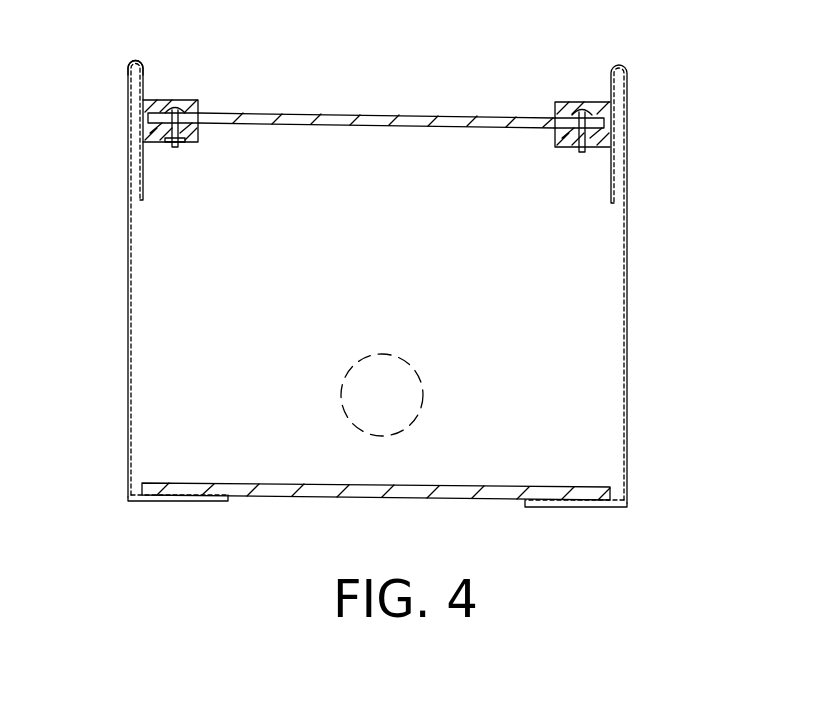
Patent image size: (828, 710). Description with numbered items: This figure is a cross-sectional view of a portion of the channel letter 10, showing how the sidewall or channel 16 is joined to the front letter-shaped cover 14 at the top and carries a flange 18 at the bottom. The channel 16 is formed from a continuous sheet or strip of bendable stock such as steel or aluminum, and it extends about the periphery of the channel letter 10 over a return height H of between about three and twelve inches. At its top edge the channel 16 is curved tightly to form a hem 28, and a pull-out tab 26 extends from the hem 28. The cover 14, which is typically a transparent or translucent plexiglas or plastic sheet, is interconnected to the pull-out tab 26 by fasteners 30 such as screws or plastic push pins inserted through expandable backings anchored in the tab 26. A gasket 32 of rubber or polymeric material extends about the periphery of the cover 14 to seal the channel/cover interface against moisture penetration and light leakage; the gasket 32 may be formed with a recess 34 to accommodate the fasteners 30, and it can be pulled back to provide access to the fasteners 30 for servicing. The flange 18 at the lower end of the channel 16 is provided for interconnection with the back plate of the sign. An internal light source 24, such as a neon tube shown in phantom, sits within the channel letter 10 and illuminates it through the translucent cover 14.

The channel letter 10 is at (683, 182).
The front letter-shaped cover 14 is at (350, 112).
The sidewall or channel 16 is at (128, 278).
The flange 18 is at (169, 500).
The internal light source 24 is at (424, 392).
The pull-out tab 26 is at (196, 142).
The hem 28 is at (148, 72).
The fasteners 30 is at (176, 150).
The gasket 32 is at (198, 100).
The recess 34 is at (568, 106).
The return height H is at (95, 497).